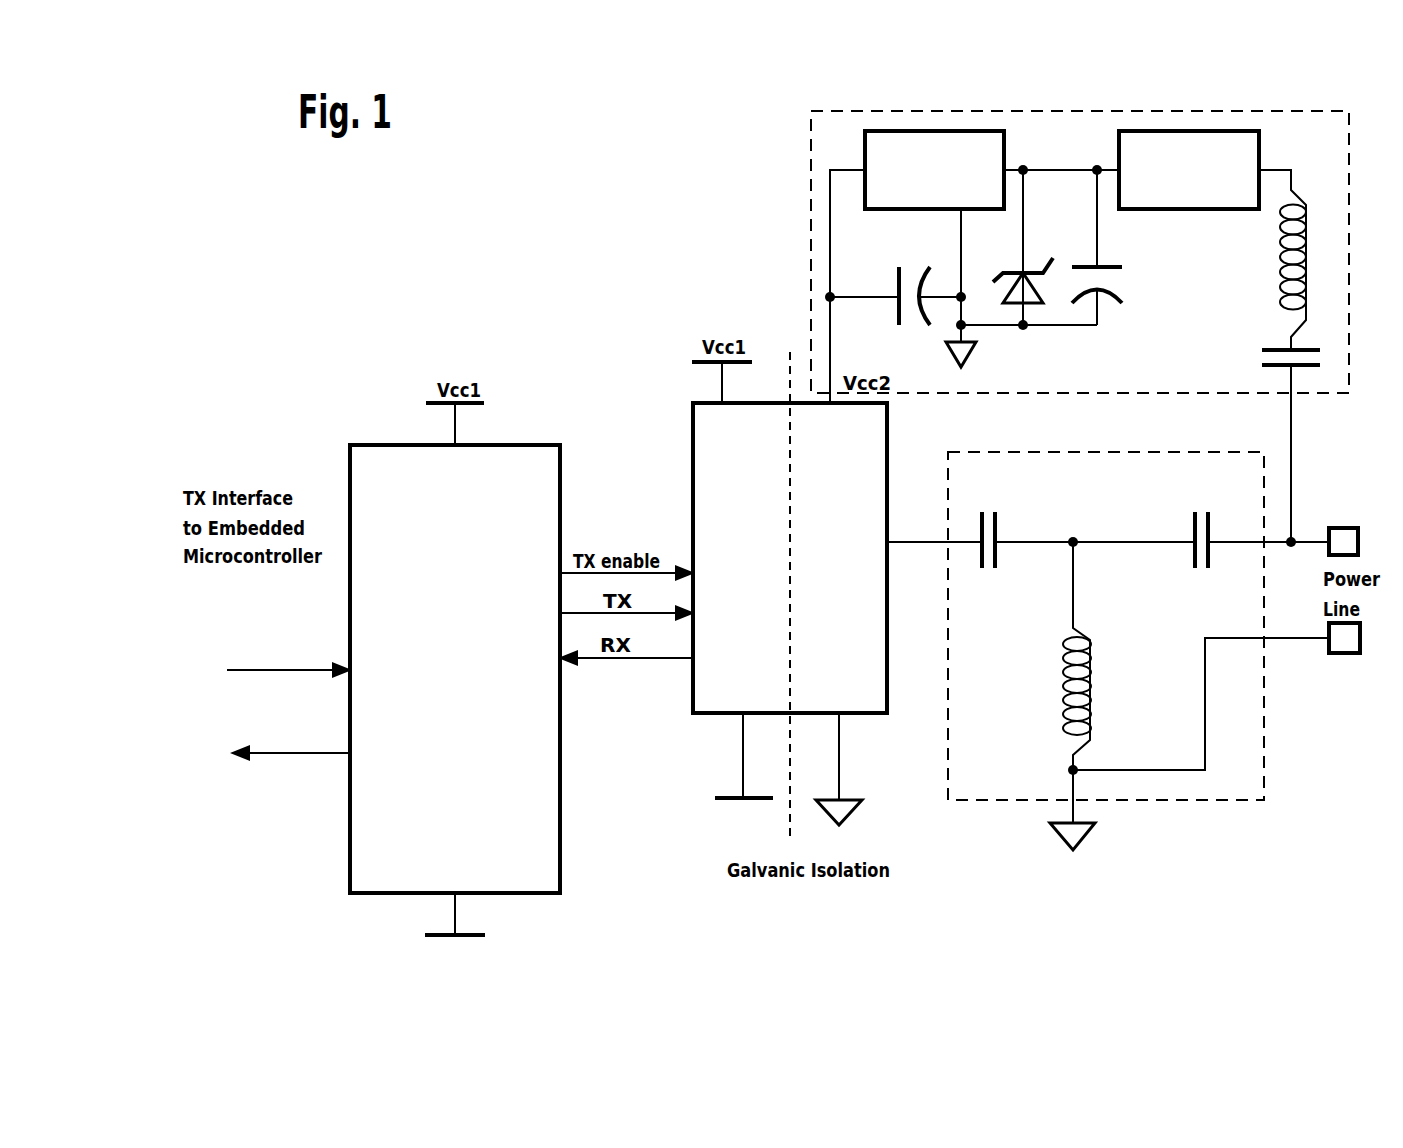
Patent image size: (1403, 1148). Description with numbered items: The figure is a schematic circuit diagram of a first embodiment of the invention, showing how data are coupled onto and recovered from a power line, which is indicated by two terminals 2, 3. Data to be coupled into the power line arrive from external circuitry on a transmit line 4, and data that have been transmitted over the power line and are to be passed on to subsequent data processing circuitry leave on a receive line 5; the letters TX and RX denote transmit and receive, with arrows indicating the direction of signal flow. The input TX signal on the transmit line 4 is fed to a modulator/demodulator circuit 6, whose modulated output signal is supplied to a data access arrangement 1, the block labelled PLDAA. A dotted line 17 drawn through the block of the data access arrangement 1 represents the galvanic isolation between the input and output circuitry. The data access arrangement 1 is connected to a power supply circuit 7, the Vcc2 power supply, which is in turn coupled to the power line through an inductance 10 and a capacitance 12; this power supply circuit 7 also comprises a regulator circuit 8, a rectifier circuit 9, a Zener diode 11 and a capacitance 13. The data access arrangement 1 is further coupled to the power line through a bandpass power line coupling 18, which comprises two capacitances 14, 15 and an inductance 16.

The data access arrangement 1 is at (887, 688).
The power line terminal 2 is at (1343, 527).
The power line terminal 3 is at (1345, 655).
The transmit line 4 is at (240, 670).
The receive line 5 is at (286, 757).
The modulator/demodulator circuit 6 is at (560, 760).
The power supply circuit 7 is at (810, 163).
The regulator circuit 8 is at (1004, 140).
The rectifier circuit 9 is at (1259, 140).
The inductance 10 is at (1282, 265).
The Zener diode 11 is at (1030, 305).
The capacitance 12 is at (1262, 357).
The capacitance 13 is at (897, 290).
The capacitance 14 is at (990, 570).
The capacitance 15 is at (1190, 565).
The inductance 16 is at (1063, 710).
The dotted line 17 is at (790, 817).
The bandpass power line coupling 18 is at (988, 800).